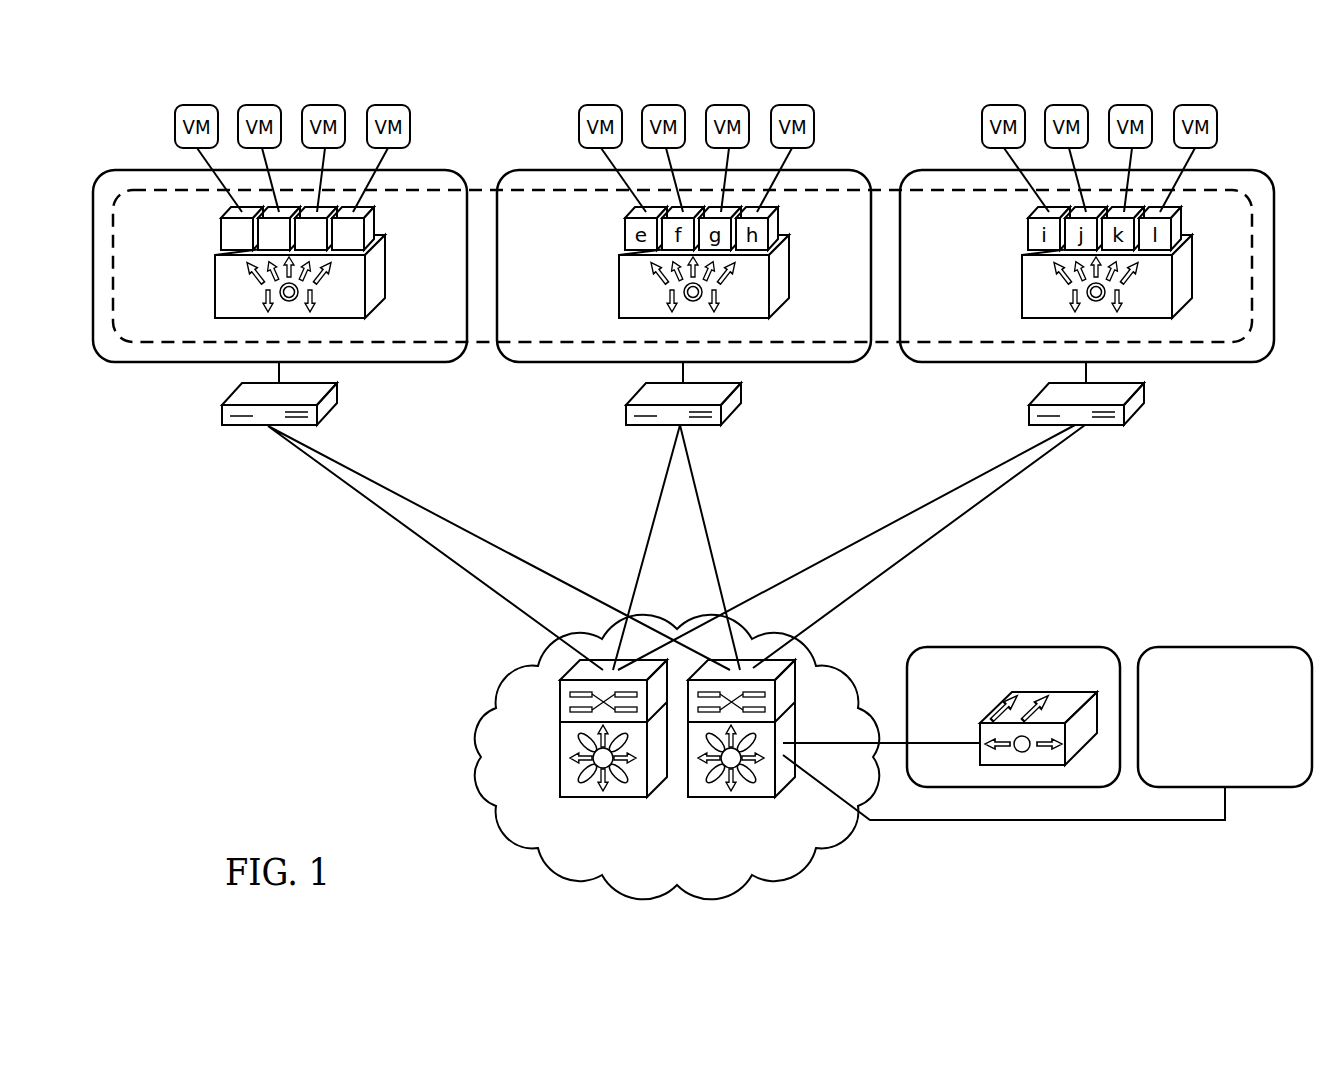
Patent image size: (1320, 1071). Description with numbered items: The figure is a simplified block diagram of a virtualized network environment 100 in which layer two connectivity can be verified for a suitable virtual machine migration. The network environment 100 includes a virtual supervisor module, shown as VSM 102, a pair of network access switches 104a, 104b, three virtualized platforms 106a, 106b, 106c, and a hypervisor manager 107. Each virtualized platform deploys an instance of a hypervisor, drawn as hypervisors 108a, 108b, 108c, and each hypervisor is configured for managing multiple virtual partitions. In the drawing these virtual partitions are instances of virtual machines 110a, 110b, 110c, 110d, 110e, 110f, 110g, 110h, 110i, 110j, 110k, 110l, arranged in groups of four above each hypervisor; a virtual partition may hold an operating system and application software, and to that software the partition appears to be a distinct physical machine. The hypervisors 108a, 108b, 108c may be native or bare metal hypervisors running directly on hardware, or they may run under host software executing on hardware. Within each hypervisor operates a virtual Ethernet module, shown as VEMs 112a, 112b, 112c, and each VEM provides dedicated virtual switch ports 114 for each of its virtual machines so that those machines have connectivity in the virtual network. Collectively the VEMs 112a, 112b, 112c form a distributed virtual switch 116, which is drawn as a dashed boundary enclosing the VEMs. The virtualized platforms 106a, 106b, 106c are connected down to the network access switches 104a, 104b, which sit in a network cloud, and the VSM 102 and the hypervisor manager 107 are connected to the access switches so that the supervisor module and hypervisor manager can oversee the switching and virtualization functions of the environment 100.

The virtualized network environment 100 is at (342, 696).
The virtual supervisor module 102 is at (995, 710).
The network access switch 104a is at (603, 800).
The network access switch 104b is at (733, 800).
The virtualized platform 106a is at (276, 432).
The virtualized platform 106b is at (642, 412).
The virtualized platform 106c is at (1086, 431).
The hypervisor manager 107 is at (1205, 757).
The hypervisor 108a is at (278, 250).
The hypervisor 108b is at (682, 250).
The hypervisor 108c is at (1085, 250).
The virtual machine 110a is at (197, 132).
The virtual machine 110b is at (248, 132).
The virtual machine 110c is at (312, 132).
The virtual machine 110d is at (376, 132).
The virtual machine 110e is at (601, 132).
The virtual machine 110f is at (652, 132).
The virtual machine 110g is at (739, 132).
The virtual machine 110h is at (797, 132).
The virtual machine 110i is at (1015, 132).
The virtual machine 110j is at (1077, 131).
The virtual machine 110k is at (1143, 132).
The virtual machine 110l is at (1199, 132).
The virtual Ethernet module 112a is at (122, 292).
The virtual Ethernet module 112b is at (663, 276).
The virtual Ethernet module 112c is at (1066, 276).
The virtual switch ports 114 is at (115, 234).
The distributed virtual switch 116 is at (489, 346).